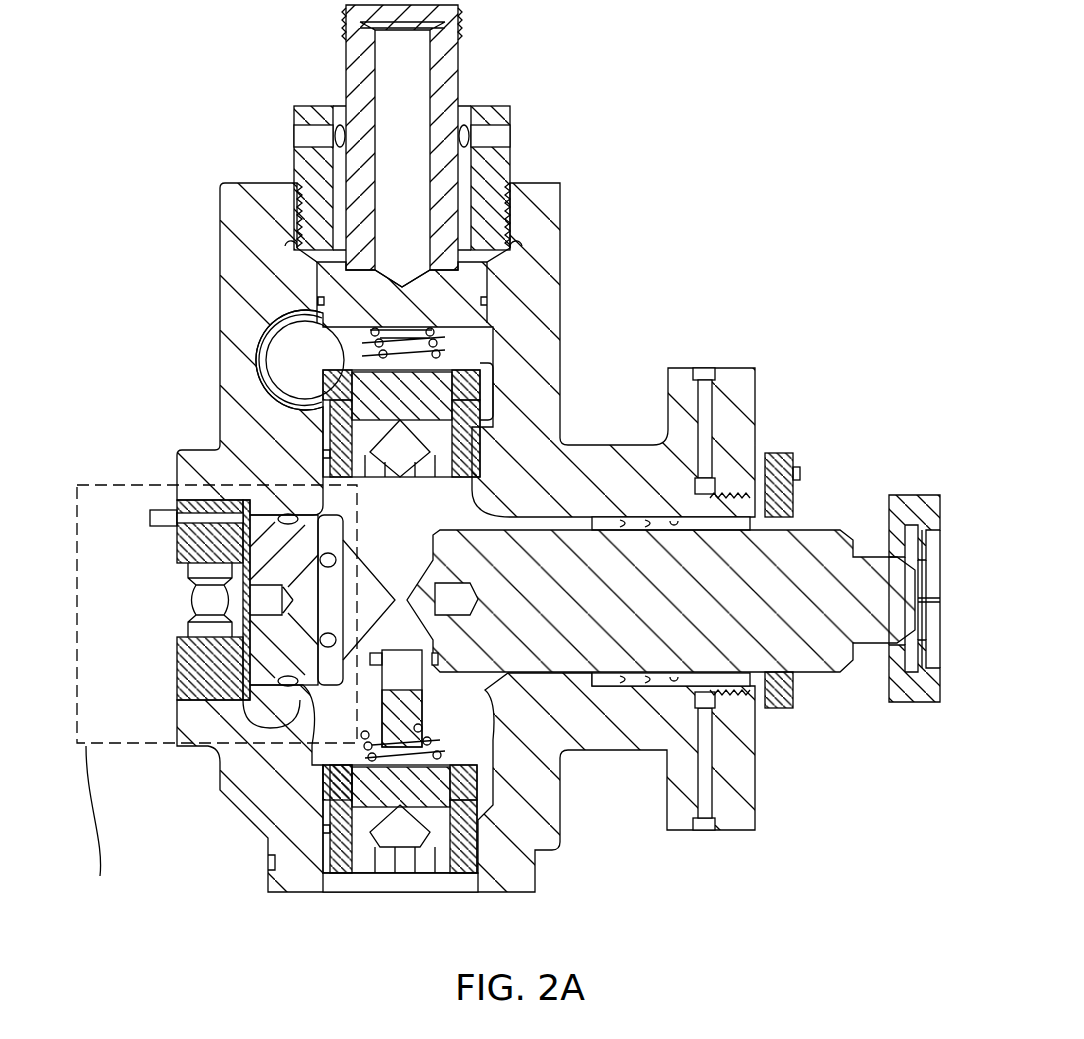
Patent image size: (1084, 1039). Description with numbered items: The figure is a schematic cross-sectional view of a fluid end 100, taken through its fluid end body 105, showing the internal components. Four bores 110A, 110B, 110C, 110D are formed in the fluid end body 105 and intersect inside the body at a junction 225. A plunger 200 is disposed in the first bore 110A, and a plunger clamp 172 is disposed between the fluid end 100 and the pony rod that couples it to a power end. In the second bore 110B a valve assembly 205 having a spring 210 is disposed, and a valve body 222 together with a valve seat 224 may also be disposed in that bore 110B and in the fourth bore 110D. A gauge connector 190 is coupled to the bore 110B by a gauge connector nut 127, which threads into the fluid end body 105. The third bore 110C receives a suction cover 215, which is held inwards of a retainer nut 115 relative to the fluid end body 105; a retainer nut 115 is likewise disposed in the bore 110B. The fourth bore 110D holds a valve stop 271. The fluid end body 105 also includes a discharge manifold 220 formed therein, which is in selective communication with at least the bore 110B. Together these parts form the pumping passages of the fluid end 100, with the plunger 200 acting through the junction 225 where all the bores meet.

The fluid end 100 is at (756, 175).
The fluid end body 105 is at (240, 215).
The bore 110A is at (535, 525).
The bore 110B is at (330, 462).
The bore 110C is at (262, 728).
The bore 110D is at (487, 857).
The retainer nut 115 is at (176, 538).
The gauge connector nut 127 is at (510, 112).
The plunger clamp 172 is at (912, 495).
The gauge connector 190 is at (460, 60).
The plunger 200 is at (815, 665).
The valve assembly 205 is at (506, 372).
The spring 210 is at (435, 338).
The suction cover 215 is at (260, 653).
The discharge manifold 220 is at (290, 358).
The valve body 222 is at (455, 410).
The valve seat 224 is at (320, 398).
The junction 225 is at (412, 556).
The valve stop 271 is at (320, 833).